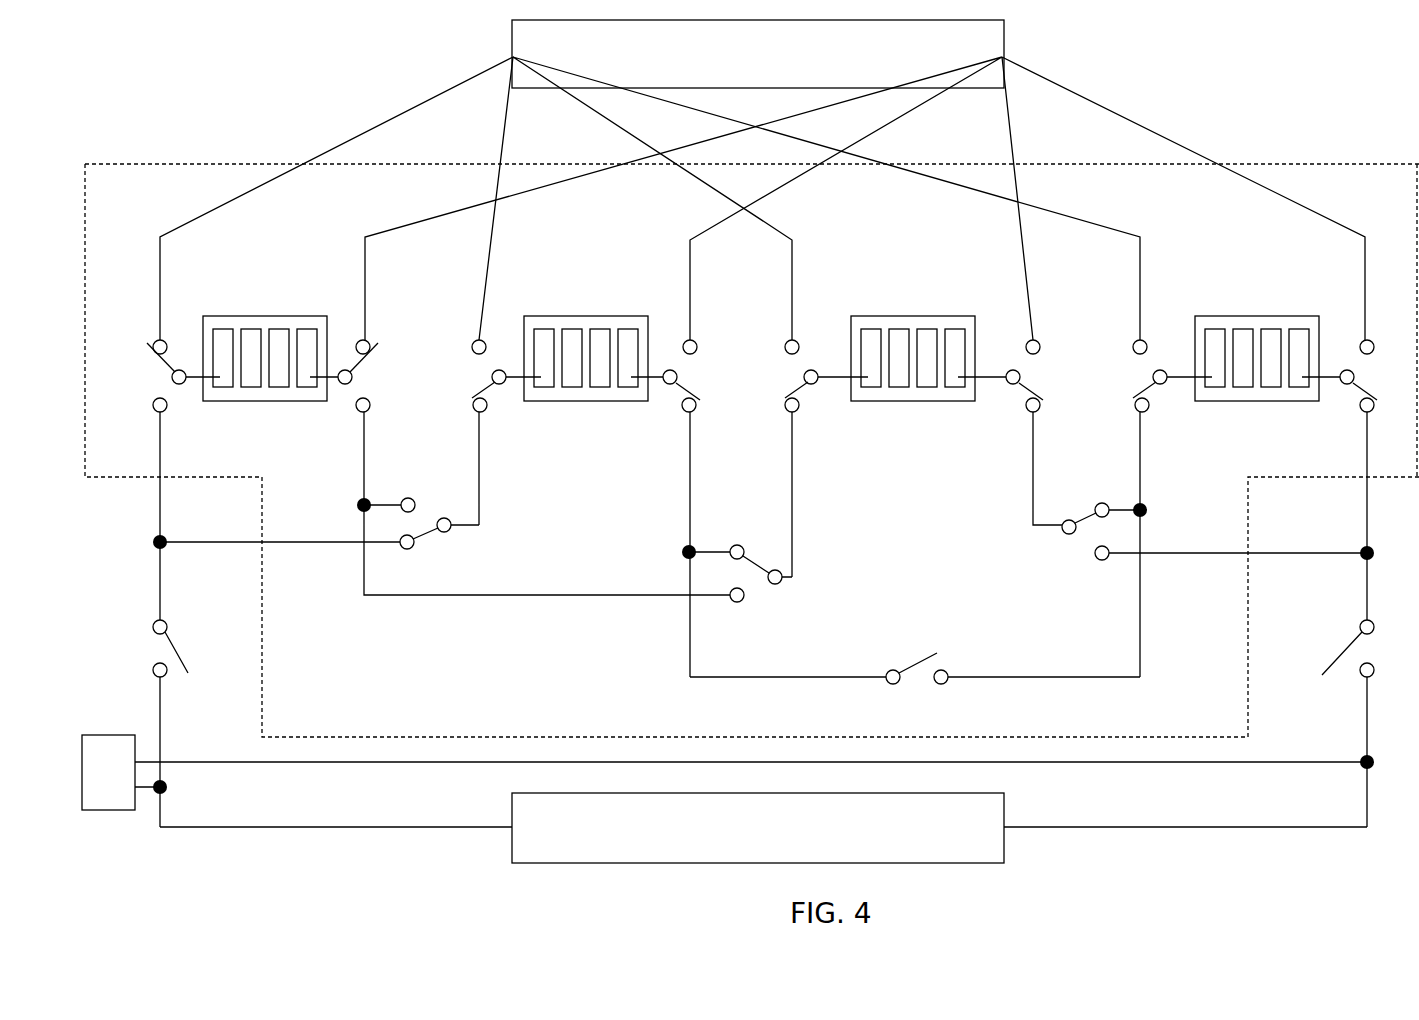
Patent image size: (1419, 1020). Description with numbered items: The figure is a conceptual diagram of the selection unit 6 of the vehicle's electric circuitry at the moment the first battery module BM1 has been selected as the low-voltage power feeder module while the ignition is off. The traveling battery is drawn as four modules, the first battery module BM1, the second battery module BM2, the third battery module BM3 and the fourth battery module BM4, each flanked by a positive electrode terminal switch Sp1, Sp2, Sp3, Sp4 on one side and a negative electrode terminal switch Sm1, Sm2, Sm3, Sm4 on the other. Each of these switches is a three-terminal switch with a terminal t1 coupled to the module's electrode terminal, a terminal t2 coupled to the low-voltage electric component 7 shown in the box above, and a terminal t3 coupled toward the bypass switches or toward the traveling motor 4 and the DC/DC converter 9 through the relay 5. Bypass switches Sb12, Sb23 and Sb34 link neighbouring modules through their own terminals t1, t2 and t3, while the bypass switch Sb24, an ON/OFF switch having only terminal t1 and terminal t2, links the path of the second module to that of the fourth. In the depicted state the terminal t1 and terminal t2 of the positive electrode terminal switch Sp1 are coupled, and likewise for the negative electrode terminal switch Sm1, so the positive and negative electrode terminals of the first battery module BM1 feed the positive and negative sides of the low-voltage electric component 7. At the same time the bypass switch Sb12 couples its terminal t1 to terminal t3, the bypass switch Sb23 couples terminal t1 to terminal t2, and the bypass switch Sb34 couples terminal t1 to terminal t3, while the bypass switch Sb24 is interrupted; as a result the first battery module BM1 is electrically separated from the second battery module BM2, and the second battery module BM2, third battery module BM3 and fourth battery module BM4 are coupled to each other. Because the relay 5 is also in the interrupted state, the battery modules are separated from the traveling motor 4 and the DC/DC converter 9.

The traveling motor 4 is at (763, 828).
The relay 5 is at (150, 643).
The selection unit 6 is at (1360, 163).
The low-voltage electric component 7 is at (762, 180).
The DC/DC converter 9 is at (724, 772).
The first battery module BM1 is at (262, 341).
The second battery module BM2 is at (584, 341).
The third battery module BM3 is at (912, 341).
The fourth battery module BM4 is at (1253, 341).
The positive electrode terminal switch Sp1 is at (140, 366).
The positive electrode terminal switch Sp2 is at (468, 366).
The positive electrode terminal switch Sp3 is at (778, 366).
The positive electrode terminal switch Sp4 is at (1125, 370).
The negative electrode terminal switch Sm1 is at (380, 378).
The negative electrode terminal switch Sm2 is at (703, 376).
The negative electrode terminal switch Sm3 is at (1048, 376).
The negative electrode terminal switch Sm4 is at (1374, 380).
The bypass switch Sb12 is at (445, 548).
The bypass switch Sb23 is at (788, 603).
The bypass switch Sb34 is at (1068, 548).
The bypass switch Sb24 is at (951, 654).
The terminal t1 is at (184, 384).
The terminal t2 is at (166, 341).
The terminal t3 is at (153, 407).